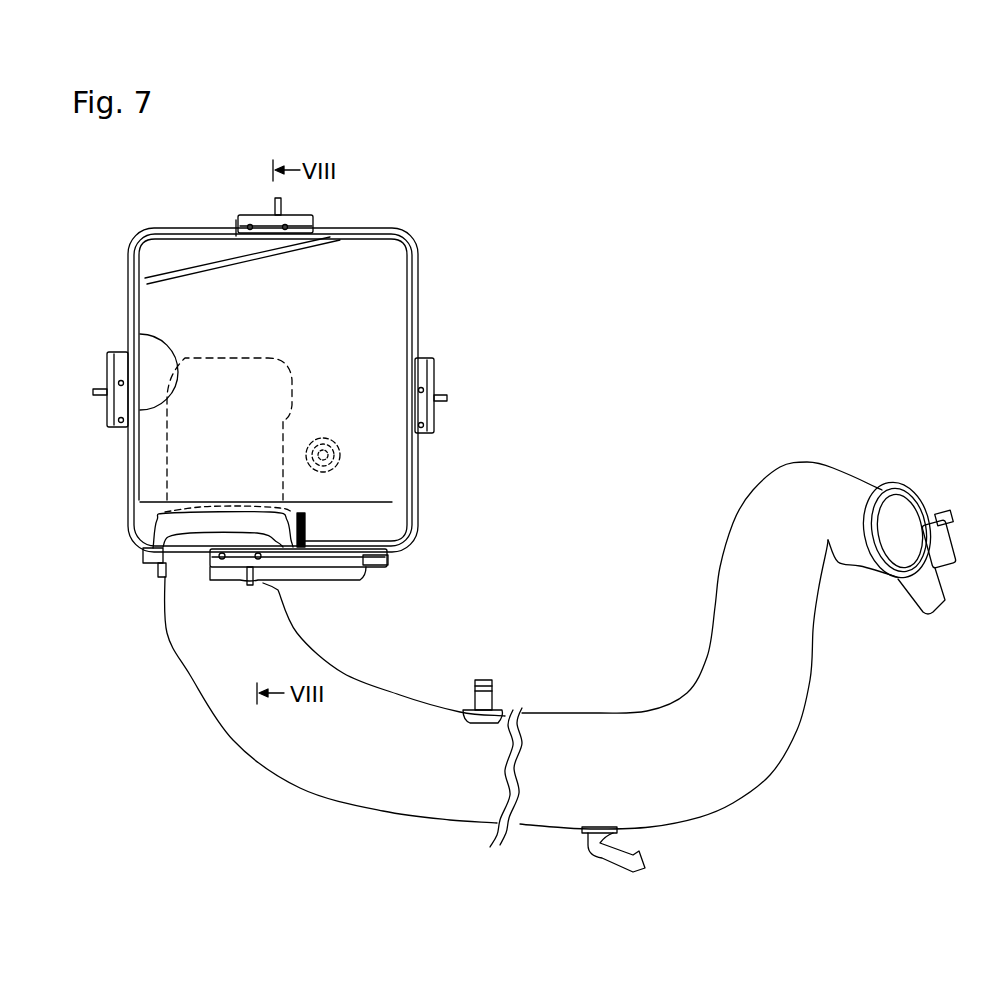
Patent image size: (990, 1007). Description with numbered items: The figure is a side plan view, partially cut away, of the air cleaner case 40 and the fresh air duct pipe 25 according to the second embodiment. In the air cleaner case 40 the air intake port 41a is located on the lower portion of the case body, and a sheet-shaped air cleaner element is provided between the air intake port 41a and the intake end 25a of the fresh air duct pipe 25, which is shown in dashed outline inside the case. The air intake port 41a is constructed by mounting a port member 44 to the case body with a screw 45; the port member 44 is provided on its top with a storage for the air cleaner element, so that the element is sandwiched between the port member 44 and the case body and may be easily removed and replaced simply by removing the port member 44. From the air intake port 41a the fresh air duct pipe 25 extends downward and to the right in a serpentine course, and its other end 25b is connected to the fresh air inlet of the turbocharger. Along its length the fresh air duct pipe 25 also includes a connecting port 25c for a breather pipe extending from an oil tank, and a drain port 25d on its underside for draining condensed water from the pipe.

The air cleaner case 40 is at (430, 252).
The intake end of the fresh air duct pipe 25a is at (272, 383).
The screw 45 is at (335, 443).
The port member 44 is at (372, 577).
The air intake port 41a is at (346, 590).
The connecting port 25c is at (495, 678).
The fresh air duct pipe 25 is at (657, 742).
The drain port 25d is at (645, 856).
The other end of the fresh air duct pipe 25b is at (920, 497).